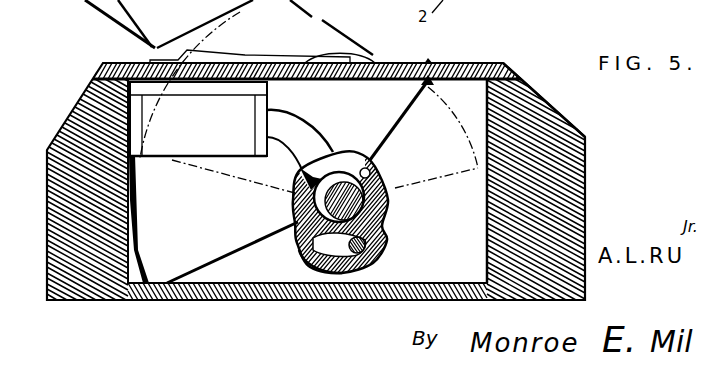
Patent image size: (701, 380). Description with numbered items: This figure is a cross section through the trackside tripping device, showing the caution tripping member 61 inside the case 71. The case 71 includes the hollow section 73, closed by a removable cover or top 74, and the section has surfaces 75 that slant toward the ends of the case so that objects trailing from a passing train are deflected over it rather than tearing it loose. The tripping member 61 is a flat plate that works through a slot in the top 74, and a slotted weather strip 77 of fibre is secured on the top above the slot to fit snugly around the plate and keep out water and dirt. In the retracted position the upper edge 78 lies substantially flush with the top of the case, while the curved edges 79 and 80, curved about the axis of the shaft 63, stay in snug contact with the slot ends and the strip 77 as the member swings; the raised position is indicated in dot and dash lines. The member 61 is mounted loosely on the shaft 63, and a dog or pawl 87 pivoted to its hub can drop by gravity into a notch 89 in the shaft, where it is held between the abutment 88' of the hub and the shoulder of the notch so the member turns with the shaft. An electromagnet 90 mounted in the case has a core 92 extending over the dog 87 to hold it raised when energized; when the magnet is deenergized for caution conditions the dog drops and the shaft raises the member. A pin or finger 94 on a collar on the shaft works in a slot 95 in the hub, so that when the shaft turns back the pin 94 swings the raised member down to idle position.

The caution tripping member 61 is at (232, 252).
The shaft 63 is at (367, 205).
The case 71 is at (176, 314).
The hollow section 73 is at (570, 172).
The cover or top 74 is at (503, 63).
The converging surfaces 75 is at (565, 115).
The weather strips 77 is at (427, 62).
The upper edge 78 is at (267, 53).
The curved edge 79 is at (355, 80).
The curved edge 80 is at (135, 167).
The dog or pawl 87 is at (347, 163).
The abutment 88' is at (393, 159).
The notch 89 is at (296, 192).
The electromagnet 90 is at (197, 119).
The core 92 is at (307, 136).
The pin or finger 94 is at (362, 273).
The slot 95 is at (322, 276).